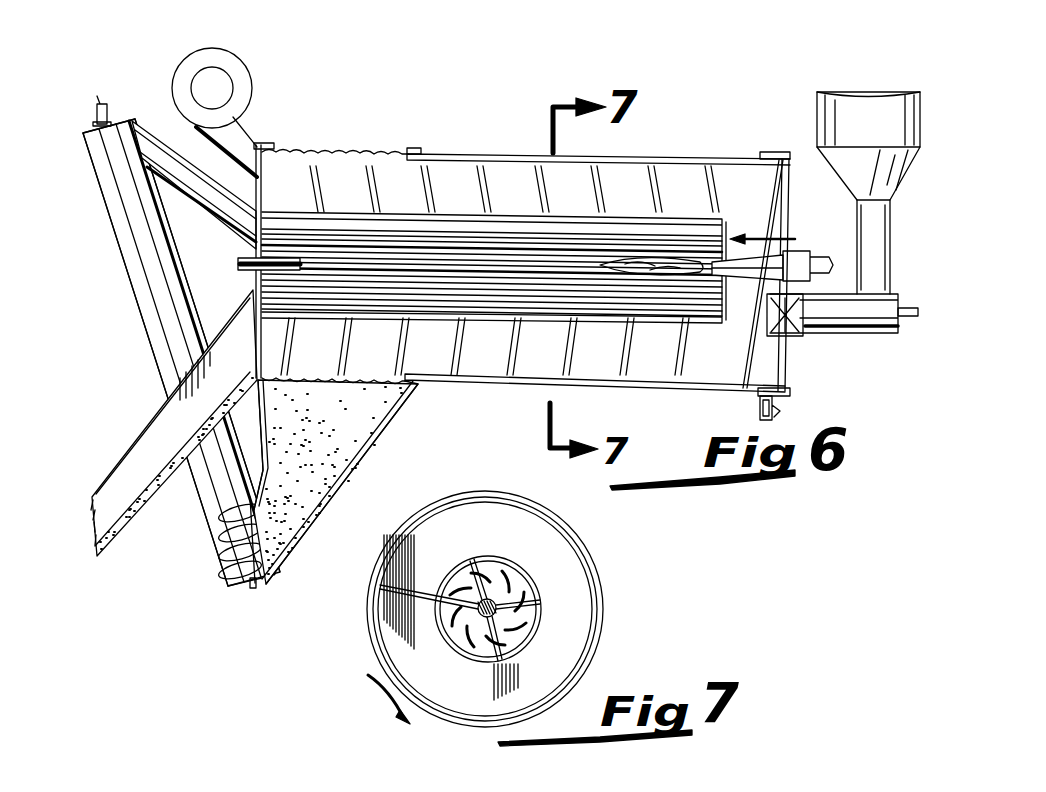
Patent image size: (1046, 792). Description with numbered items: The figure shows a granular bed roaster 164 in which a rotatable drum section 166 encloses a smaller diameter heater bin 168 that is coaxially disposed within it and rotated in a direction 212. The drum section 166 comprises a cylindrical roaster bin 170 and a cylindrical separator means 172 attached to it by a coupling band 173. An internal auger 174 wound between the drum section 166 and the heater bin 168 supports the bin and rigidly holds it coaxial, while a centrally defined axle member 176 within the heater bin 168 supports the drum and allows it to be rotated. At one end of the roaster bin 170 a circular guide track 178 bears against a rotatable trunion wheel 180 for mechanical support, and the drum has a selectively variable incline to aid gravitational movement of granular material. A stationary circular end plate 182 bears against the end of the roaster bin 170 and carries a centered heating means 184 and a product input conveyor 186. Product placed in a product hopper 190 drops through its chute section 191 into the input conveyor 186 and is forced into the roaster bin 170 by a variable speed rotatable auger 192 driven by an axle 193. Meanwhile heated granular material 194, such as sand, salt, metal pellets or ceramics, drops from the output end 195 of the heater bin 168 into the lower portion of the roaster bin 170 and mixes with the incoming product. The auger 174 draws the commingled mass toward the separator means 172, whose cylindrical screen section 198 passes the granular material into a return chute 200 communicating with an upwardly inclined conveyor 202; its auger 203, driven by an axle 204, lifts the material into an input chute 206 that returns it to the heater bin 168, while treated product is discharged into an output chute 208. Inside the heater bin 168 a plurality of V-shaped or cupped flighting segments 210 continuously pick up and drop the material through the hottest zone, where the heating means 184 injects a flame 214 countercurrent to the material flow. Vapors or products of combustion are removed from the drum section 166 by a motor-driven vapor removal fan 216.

In FIG. 6, the roaster 164 is at (522, 110).
In FIG. 6, the rotatable drum section 166 is at (416, 135).
In FIG. 6, the heater bin 168 is at (701, 326).
In FIG. 7, the heater bin 168 is at (537, 620).
In FIG. 6, the roaster bin 170 is at (650, 156).
In FIG. 7, the roaster bin 170 is at (589, 546).
In FIG. 6, the separator means 172 is at (354, 150).
In FIG. 6, the coupling band 173 is at (404, 387).
In FIG. 6, the internal auger 174 is at (543, 168).
In FIG. 7, the internal auger 174 is at (506, 543).
In FIG. 6, the axle member 176 is at (247, 270).
In FIG. 7, the axle member 176 is at (511, 586).
In FIG. 6, the circular guide track 178 is at (775, 154).
In FIG. 7, the circular guide track 178 is at (569, 520).
In FIG. 6, the trunion wheel 180 is at (776, 408).
In FIG. 6, the end plate 182 is at (790, 376).
In FIG. 6, the heating means 184 is at (797, 256).
In FIG. 6, the product input conveyor 186 is at (834, 331).
In FIG. 6, the product hopper 190 is at (860, 92).
In FIG. 6, the chute section 191 is at (860, 210).
In FIG. 6, the rotatable auger 192 is at (780, 338).
In FIG. 6, the axle 193 is at (905, 318).
In FIG. 6, the heated granular material 194 is at (538, 298).
In FIG. 6, the output end 195 is at (787, 236).
In FIG. 6, the cylindrical screen section 198 is at (282, 146).
In FIG. 6, the return chute 200 is at (396, 437).
In FIG. 6, the upwardly inclined conveyor 202 is at (128, 288).
In FIG. 6, the auger 203 is at (250, 523).
In FIG. 6, the axle 204 is at (96, 112).
In FIG. 6, the input chute 206 is at (150, 124).
In FIG. 6, the output chute 208 is at (97, 536).
In FIG. 6, the flighting segments 210 is at (344, 258).
In FIG. 7, the flighting segments 210 is at (450, 636).
In FIG. 7, the direction of rotation 212 is at (378, 698).
In FIG. 6, the flame 214 is at (678, 276).
In FIG. 6, the vapor removal fan 216 is at (230, 48).